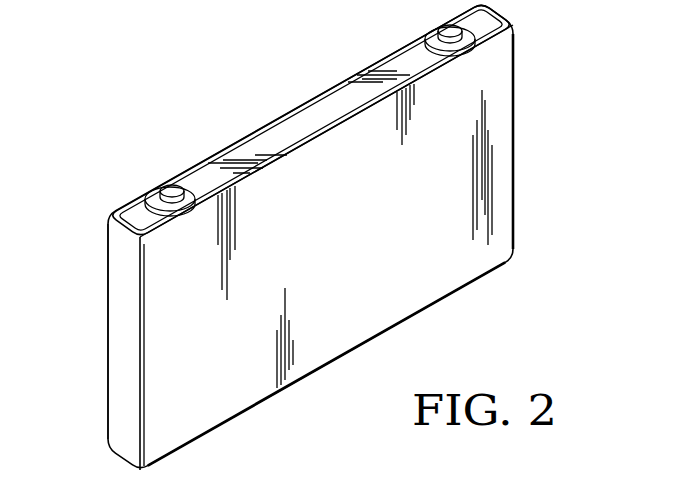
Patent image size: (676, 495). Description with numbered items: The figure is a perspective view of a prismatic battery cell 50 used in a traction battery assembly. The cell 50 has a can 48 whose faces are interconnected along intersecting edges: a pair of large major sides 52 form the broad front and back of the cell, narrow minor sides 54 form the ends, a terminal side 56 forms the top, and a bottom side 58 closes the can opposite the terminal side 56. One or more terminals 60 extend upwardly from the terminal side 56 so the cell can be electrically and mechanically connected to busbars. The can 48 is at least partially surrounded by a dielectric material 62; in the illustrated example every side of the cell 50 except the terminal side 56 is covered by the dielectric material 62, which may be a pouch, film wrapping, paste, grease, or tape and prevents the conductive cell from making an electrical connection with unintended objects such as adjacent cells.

The battery cell 50 is at (238, 60).
The can 48 is at (500, 138).
The major sides 52 is at (362, 247).
The minor sides 54 is at (120, 360).
The terminal side 56 is at (333, 83).
The bottom side 58 is at (455, 292).
The terminals 60 is at (172, 190).
The dielectric material 62 is at (213, 385).